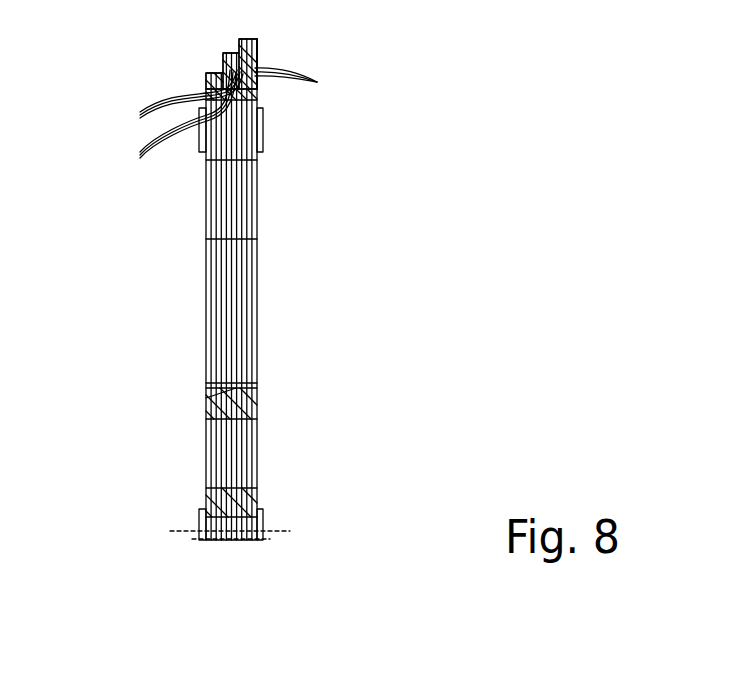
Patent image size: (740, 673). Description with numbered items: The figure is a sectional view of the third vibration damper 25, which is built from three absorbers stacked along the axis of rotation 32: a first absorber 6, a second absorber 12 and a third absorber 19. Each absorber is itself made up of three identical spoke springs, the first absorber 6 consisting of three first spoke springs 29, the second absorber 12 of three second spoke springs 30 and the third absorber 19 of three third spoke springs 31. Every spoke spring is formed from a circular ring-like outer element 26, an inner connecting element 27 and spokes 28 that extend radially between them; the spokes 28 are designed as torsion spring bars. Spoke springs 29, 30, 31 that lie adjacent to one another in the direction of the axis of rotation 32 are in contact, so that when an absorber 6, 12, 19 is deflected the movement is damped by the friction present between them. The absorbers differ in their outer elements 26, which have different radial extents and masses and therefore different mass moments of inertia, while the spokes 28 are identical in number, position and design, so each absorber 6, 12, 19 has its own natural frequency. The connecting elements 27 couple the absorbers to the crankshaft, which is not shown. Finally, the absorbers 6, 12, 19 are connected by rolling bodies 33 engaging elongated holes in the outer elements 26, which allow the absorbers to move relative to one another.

The third vibration damper 25 is at (306, 214).
The third absorber 19 is at (226, 35).
The second absorber 12 is at (207, 56).
The first absorber 6 is at (194, 78).
The outer element 26 is at (258, 50).
The first spoke springs 29 is at (177, 106).
The second spoke springs 30 is at (174, 124).
The third spoke springs 31 is at (302, 86).
The rolling bodies 33 is at (263, 125).
The spokes 28 is at (210, 309).
The inner connecting element 27 is at (210, 458).
The axis of rotation 32 is at (285, 533).